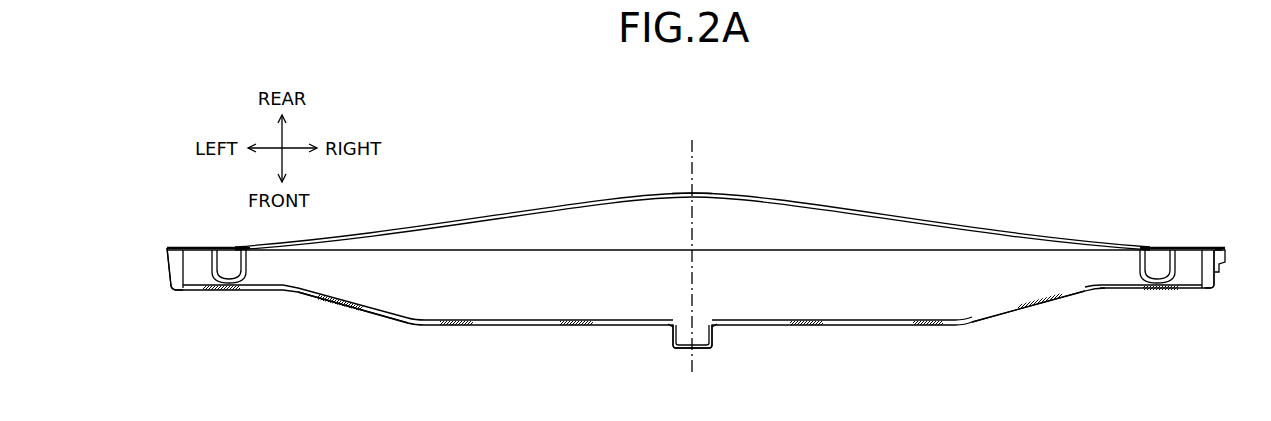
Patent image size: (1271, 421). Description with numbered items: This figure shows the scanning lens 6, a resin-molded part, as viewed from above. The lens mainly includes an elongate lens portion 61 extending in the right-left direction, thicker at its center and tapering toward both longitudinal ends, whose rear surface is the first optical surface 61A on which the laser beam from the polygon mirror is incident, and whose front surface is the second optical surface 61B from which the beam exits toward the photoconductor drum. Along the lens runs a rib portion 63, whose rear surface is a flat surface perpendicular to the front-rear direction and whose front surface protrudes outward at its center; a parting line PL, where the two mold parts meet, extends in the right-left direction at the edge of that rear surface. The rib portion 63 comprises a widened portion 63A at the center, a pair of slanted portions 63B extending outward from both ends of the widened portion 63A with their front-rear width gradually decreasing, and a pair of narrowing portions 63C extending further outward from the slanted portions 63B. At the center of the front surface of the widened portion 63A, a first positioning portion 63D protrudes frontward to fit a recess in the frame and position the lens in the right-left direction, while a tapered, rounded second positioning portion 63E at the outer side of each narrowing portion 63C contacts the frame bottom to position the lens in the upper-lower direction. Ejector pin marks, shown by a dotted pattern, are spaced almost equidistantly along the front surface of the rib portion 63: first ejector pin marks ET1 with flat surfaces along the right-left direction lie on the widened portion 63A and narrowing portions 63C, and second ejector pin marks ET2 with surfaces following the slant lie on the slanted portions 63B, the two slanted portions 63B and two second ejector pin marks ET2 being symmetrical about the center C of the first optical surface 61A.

The scanning lens 6 is at (972, 171).
The lens portion 61 is at (803, 228).
The first optical surface 61A is at (693, 194).
The second optical surface 61B is at (307, 298).
The rib portion 63 is at (903, 328).
The widened portion 63A is at (837, 293).
The slanted portion 63B is at (365, 287).
The narrowing portion 63C is at (197, 263).
The first positioning portion 63D is at (700, 340).
The second positioning portion 63E is at (227, 262).
The first ejector pin mark ET1 is at (228, 285).
The second ejector pin mark ET2 is at (342, 303).
The parting line PL is at (513, 248).
The center of the first optical surface C is at (690, 153).